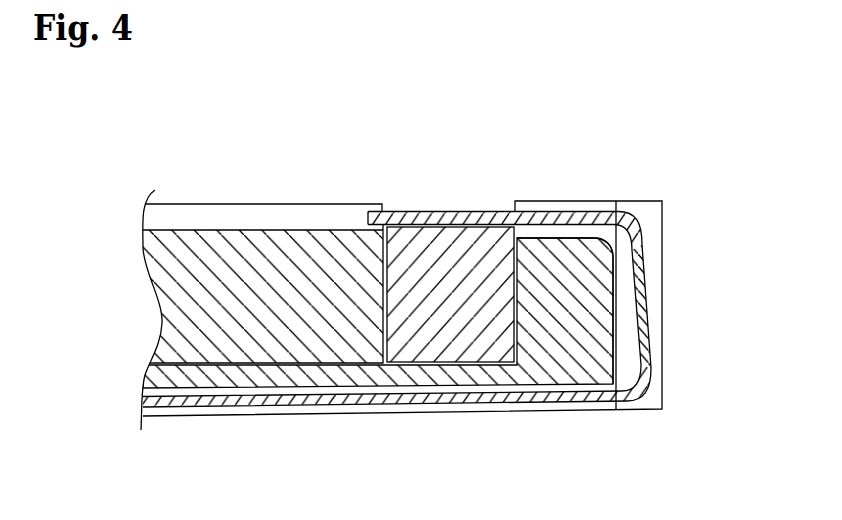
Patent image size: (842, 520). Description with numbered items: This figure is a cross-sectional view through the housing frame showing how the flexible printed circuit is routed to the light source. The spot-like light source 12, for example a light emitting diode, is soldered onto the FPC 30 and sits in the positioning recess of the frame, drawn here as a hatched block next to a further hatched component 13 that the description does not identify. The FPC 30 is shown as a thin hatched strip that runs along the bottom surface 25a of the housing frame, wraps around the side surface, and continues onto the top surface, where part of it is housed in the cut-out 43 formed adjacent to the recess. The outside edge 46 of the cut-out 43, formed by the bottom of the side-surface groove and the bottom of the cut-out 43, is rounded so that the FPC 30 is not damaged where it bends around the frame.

The spot-like light source 12 is at (427, 263).
The electrode body 13 is at (250, 256).
The bottom surface 25a is at (568, 410).
The FPC 30 is at (534, 222).
The cut-out 43 is at (560, 240).
The outside edge 46 is at (600, 242).